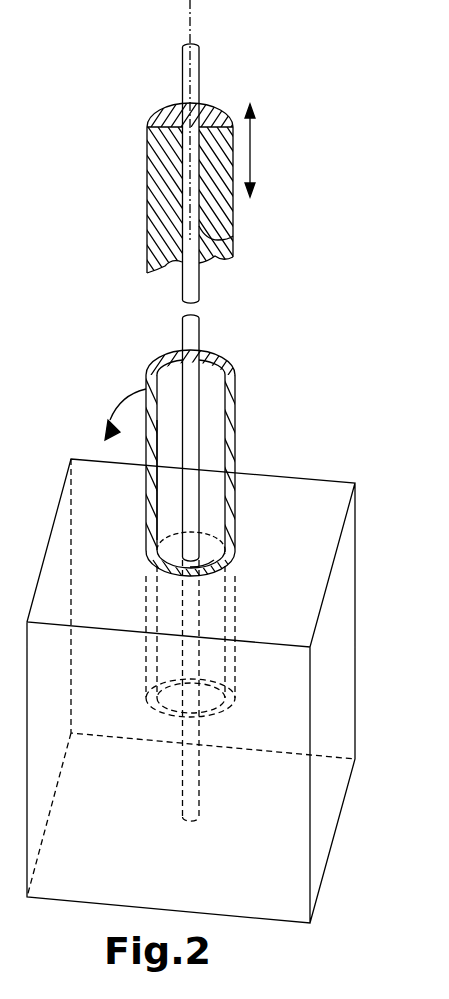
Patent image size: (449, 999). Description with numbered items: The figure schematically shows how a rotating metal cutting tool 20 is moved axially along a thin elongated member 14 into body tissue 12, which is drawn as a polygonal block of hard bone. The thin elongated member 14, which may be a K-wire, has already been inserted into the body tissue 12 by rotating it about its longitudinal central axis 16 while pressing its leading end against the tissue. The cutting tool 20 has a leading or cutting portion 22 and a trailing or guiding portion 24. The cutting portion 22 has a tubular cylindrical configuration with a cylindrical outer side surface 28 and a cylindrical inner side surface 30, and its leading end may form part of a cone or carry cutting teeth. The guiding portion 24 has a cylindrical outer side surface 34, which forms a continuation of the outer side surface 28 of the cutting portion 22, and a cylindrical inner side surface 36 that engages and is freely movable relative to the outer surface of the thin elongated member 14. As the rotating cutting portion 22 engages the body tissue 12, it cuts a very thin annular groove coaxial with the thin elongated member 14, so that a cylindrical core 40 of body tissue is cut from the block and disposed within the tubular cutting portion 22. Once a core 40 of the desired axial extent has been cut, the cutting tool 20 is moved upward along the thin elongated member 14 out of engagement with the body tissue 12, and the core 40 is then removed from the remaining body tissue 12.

The body tissue 12 is at (60, 478).
The thin elongated member 14 is at (199, 77).
The longitudinal central axis 16 is at (190, 3).
The cutting tool 20 is at (243, 212).
The cutting portion 22 is at (235, 435).
The guiding portion 24 is at (147, 208).
The cylindrical outer side surface 28 is at (235, 492).
The cylindrical inner side surface 30 is at (158, 510).
The cylindrical outer side surface 34 is at (147, 246).
The cylindrical inner side surface 36 is at (225, 240).
The cylindrical core 40 is at (207, 568).